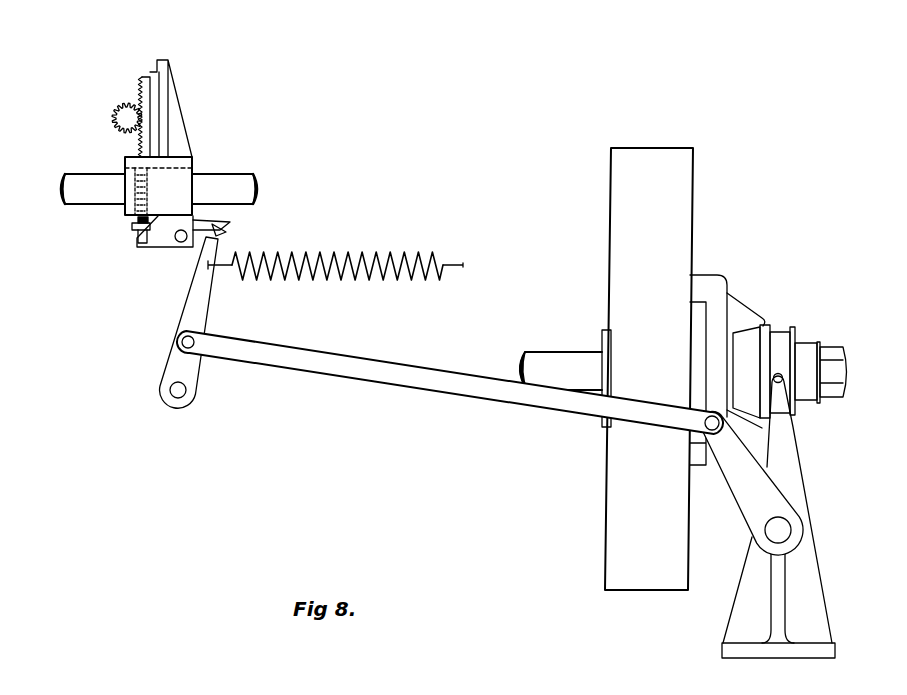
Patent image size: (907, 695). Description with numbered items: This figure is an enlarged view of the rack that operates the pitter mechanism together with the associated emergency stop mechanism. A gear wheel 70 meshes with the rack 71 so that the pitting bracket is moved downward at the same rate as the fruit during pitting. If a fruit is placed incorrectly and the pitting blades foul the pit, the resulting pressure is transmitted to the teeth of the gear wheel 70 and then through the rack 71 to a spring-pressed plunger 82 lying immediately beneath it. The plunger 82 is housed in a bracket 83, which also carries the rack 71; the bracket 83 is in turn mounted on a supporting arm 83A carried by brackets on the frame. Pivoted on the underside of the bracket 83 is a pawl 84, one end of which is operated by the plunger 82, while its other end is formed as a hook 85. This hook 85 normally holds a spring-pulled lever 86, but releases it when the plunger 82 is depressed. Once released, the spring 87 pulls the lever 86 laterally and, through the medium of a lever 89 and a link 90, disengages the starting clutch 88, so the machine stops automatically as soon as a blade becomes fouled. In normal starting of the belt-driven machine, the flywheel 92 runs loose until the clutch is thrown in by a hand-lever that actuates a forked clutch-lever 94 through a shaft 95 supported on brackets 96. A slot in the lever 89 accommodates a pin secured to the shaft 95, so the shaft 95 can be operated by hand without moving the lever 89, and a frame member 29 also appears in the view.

The frame bracket 29 is at (557, 370).
The gear wheel 70 is at (126, 118).
The rack 71 is at (145, 82).
The spring-pressed plunger 82 is at (153, 233).
The bracket 83 is at (173, 173).
The supporting arm 83A is at (105, 187).
The pawl 84 is at (230, 222).
The hook 85 is at (220, 230).
The spring-pulled lever 86 is at (193, 310).
The spring 87 is at (330, 252).
The starting clutch 88 is at (698, 372).
The lever 89 is at (762, 497).
The link 90 is at (410, 377).
The flywheel 92 is at (662, 180).
The forked clutch-lever 94 is at (777, 423).
The shaft 95 is at (782, 530).
The brackets 96 is at (800, 595).